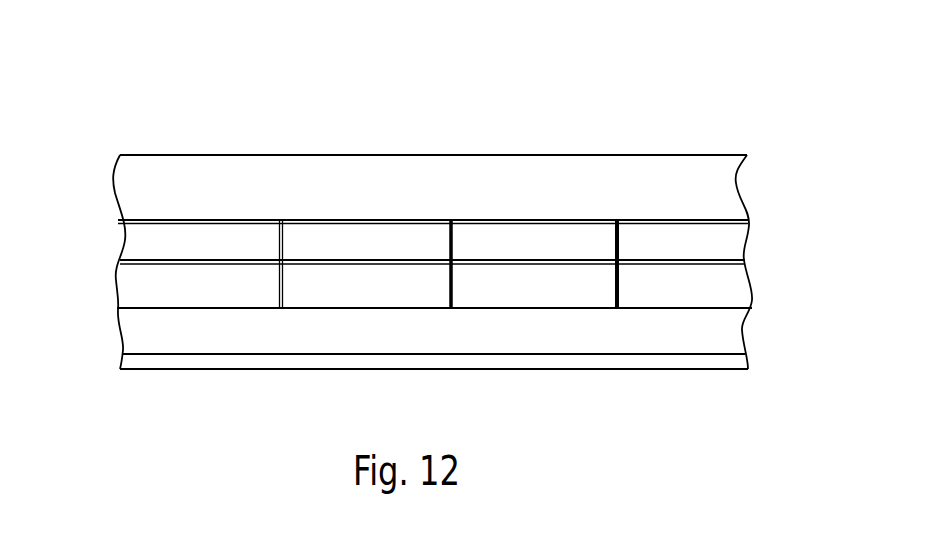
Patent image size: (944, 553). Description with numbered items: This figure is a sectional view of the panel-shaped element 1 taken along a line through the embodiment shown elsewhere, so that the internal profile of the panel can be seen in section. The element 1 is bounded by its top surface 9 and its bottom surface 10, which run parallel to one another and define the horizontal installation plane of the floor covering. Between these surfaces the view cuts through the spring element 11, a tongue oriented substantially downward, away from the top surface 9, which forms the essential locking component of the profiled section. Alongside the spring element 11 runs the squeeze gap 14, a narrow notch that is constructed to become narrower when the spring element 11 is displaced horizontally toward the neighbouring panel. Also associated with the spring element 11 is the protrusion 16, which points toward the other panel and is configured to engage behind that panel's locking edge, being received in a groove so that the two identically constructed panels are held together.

The first element 1 is at (383, 130).
The top surface 9 is at (622, 155).
The bottom surface 10 is at (615, 372).
The spring element 11 is at (158, 246).
The squeeze gap 14 is at (208, 214).
The protrusion 16 is at (130, 267).